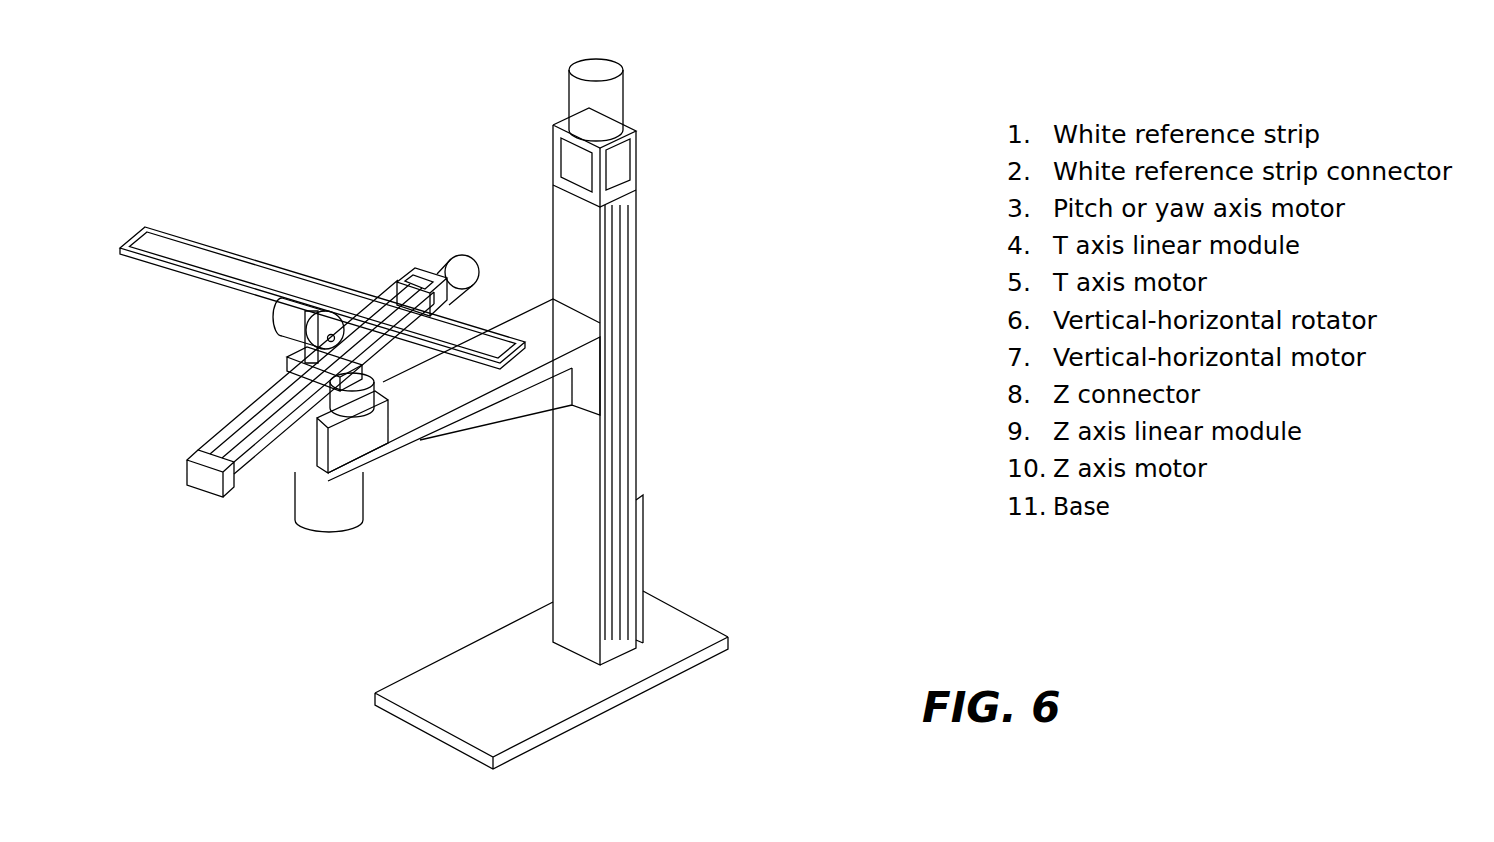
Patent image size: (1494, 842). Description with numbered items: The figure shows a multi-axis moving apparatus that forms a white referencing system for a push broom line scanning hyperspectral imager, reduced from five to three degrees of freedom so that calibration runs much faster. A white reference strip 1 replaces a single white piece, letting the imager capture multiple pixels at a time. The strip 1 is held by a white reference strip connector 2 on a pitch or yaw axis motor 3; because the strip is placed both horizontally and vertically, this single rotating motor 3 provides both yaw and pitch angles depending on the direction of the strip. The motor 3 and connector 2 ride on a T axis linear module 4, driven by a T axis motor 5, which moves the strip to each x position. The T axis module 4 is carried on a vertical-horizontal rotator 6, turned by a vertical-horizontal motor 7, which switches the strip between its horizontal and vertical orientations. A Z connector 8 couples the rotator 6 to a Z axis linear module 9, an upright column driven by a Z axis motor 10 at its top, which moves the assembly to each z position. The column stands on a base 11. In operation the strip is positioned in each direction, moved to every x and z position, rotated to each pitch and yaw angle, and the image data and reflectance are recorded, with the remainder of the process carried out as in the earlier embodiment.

The white reference strip 1 is at (185, 250).
The white reference strip connector 2 is at (322, 320).
The pitch or yaw axis motor 3 is at (292, 323).
The T axis linear module 4 is at (390, 293).
The T axis motor 5 is at (455, 272).
The vertical-horizontal rotator 6 is at (333, 452).
The vertical-horizontal motor 7 is at (333, 507).
The Z connector 8 is at (493, 408).
The Z axis linear module 9 is at (623, 377).
The Z axis motor 10 is at (612, 110).
The base 11 is at (650, 650).